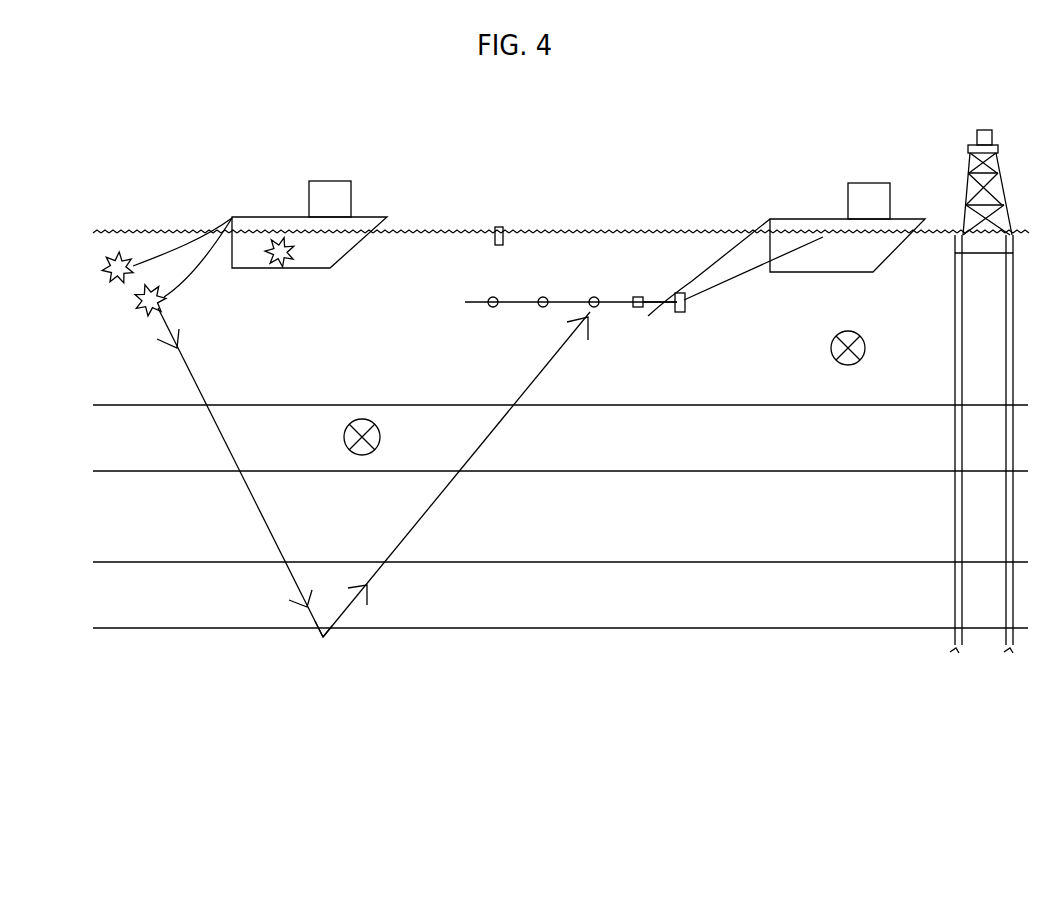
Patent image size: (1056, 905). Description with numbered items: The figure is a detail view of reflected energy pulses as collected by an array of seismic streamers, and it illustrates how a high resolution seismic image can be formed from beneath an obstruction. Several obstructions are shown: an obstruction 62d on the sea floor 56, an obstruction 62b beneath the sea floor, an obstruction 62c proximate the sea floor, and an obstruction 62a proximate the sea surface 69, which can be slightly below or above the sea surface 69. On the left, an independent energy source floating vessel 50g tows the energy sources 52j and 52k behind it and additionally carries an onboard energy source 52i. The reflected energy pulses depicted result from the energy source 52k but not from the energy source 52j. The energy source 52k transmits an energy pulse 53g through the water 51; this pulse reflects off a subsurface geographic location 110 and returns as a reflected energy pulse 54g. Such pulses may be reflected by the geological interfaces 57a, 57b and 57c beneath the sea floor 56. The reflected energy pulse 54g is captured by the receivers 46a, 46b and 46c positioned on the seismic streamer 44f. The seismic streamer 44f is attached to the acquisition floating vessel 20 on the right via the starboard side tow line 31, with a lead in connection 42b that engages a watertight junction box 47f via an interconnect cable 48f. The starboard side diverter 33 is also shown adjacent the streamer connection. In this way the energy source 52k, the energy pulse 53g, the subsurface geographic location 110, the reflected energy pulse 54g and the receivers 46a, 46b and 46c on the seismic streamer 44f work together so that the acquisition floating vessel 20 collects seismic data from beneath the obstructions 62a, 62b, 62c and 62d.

The acquisition floating vessel 20 is at (861, 182).
The starboard side tow line 31 is at (724, 283).
The starboard side diverter 33 is at (684, 314).
The lead in connection 42b is at (680, 281).
The seismic streamer 44f is at (468, 310).
The receiver 46a is at (594, 298).
The receiver 46b is at (543, 298).
The receiver 46c is at (494, 298).
The watertight junction box 47f is at (638, 297).
The interconnect cable 48f is at (640, 308).
The independent energy source floating vessel 50g is at (329, 180).
The water 51 is at (427, 255).
The onboard energy source 52i is at (263, 273).
The energy source 52j is at (106, 285).
The energy source 52k is at (139, 320).
The energy pulse 53g is at (238, 479).
The reflected energy pulse 54g is at (436, 511).
The sea floor 56 is at (874, 405).
The geological interface 57a is at (874, 471).
The geological interface 57b is at (874, 562).
The geological interface 57c is at (874, 628).
The obstruction 62a is at (502, 226).
The obstruction 62b is at (344, 435).
The obstruction 62c is at (833, 336).
The obstruction 62d is at (971, 137).
The sea surface 69 is at (680, 226).
The subsurface geographic location 110 is at (325, 641).